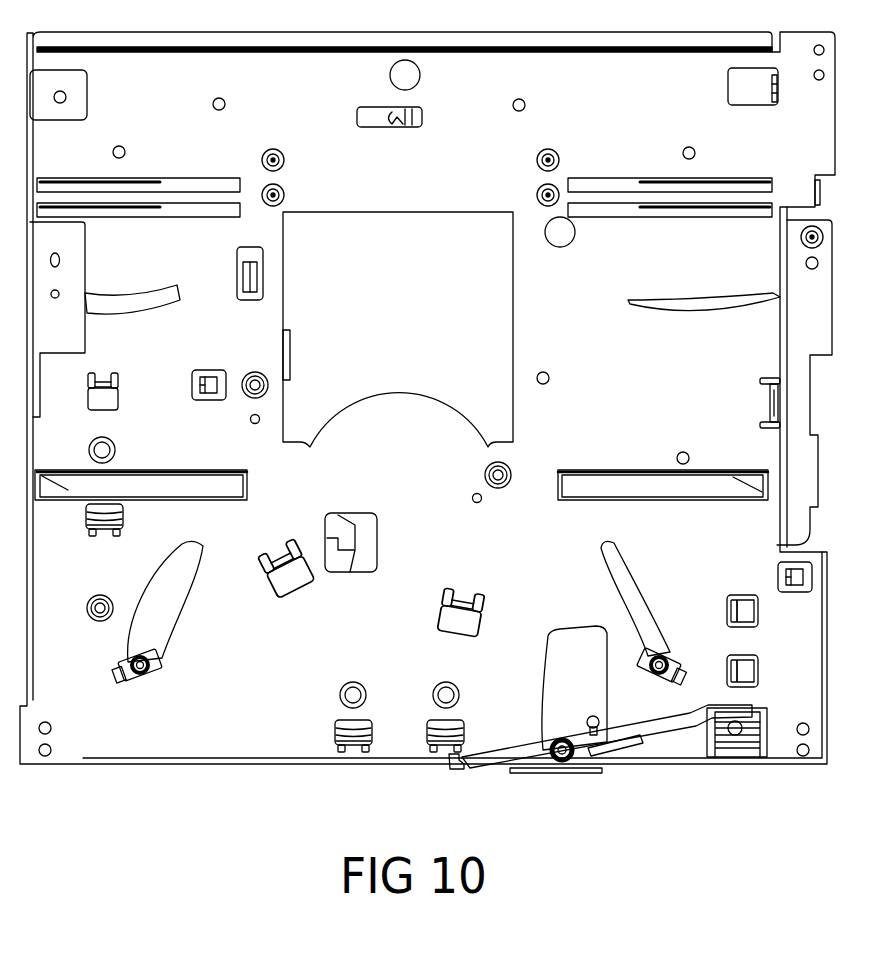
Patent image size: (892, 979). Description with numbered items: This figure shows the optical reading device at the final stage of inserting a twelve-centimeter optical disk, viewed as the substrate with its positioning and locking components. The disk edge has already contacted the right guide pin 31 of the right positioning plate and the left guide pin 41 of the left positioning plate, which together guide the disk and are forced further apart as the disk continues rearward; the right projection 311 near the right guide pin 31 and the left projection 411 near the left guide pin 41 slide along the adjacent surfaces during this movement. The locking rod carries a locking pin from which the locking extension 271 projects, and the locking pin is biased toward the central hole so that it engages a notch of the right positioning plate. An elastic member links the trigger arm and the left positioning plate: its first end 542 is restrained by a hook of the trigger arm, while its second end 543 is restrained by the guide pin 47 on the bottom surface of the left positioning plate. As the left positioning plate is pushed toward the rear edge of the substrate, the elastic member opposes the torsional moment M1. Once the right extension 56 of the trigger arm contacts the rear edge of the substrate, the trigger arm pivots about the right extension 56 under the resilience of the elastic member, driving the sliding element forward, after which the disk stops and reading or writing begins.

The locking extension 271 is at (350, 546).
The right guide pin 31 is at (153, 665).
The right projection 311 is at (128, 681).
The left guide pin 41 is at (668, 650).
The left projection 411 is at (679, 665).
The guide pin 47 is at (589, 712).
The torsional moment M1 is at (593, 709).
The first end of the elastic member 542 is at (619, 716).
The second end of the elastic member 543 is at (601, 760).
The right extension of the trigger arm 56 is at (458, 768).